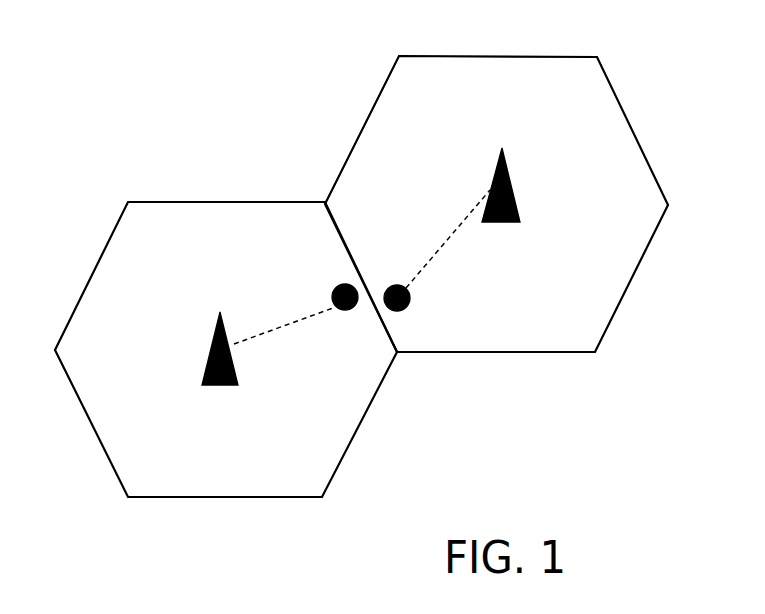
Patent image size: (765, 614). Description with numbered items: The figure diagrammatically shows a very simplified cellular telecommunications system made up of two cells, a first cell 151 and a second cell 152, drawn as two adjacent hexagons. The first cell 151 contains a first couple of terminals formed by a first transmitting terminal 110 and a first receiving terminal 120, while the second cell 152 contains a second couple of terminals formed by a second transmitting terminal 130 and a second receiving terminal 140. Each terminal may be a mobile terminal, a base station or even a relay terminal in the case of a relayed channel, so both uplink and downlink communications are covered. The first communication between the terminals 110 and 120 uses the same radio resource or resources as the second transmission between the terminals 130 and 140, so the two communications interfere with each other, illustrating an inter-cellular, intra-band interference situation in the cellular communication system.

The first transmitting terminal 110 is at (510, 163).
The first receiving terminal 120 is at (407, 308).
The second transmitting terminal 130 is at (208, 358).
The second receiving terminal 140 is at (334, 290).
The first cell 151 is at (610, 83).
The second cell 152 is at (128, 498).